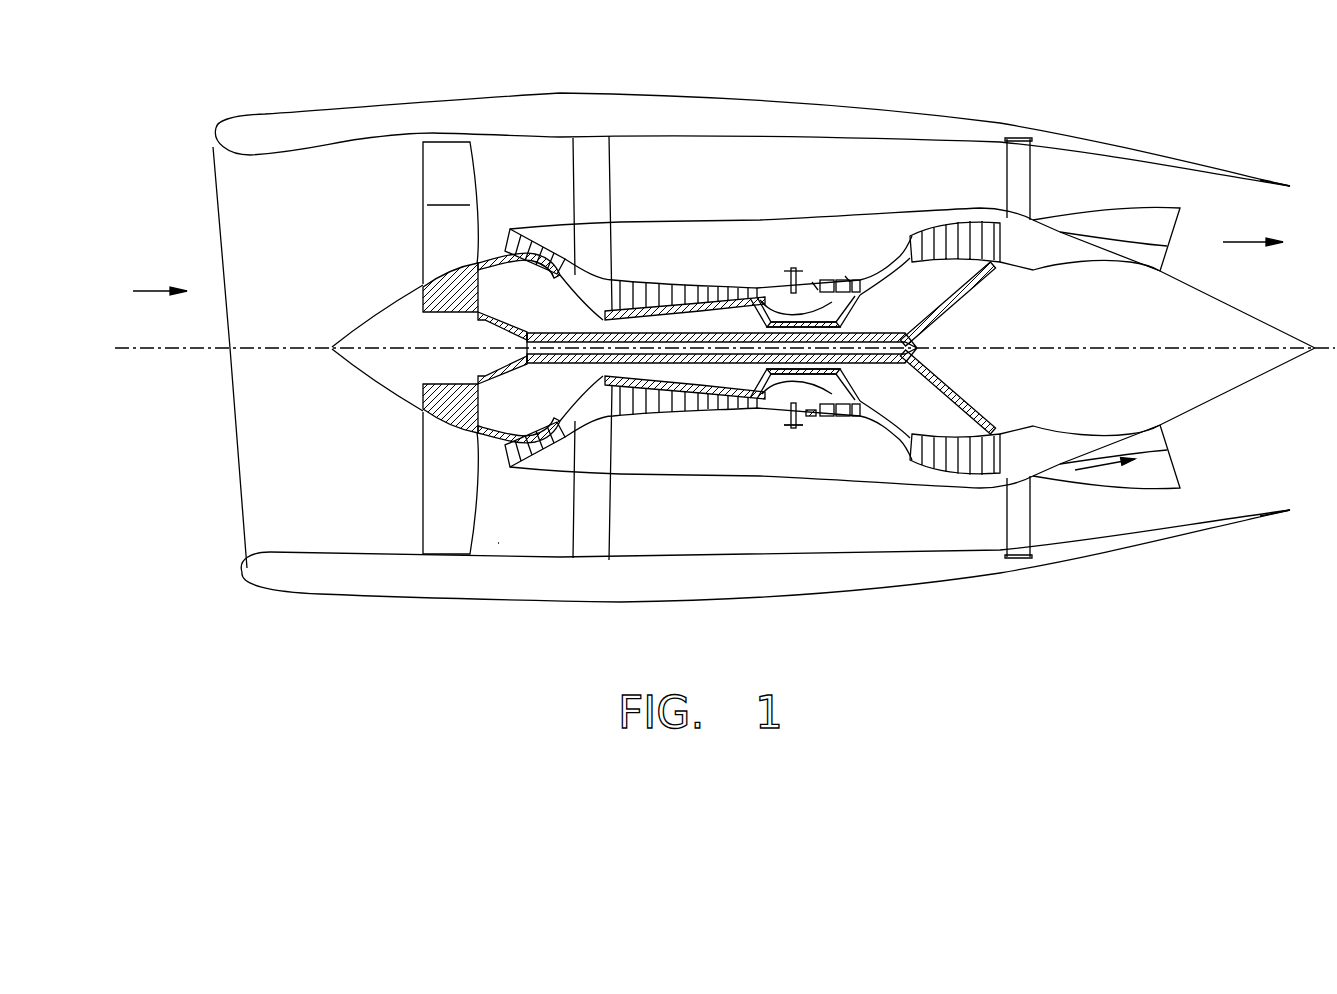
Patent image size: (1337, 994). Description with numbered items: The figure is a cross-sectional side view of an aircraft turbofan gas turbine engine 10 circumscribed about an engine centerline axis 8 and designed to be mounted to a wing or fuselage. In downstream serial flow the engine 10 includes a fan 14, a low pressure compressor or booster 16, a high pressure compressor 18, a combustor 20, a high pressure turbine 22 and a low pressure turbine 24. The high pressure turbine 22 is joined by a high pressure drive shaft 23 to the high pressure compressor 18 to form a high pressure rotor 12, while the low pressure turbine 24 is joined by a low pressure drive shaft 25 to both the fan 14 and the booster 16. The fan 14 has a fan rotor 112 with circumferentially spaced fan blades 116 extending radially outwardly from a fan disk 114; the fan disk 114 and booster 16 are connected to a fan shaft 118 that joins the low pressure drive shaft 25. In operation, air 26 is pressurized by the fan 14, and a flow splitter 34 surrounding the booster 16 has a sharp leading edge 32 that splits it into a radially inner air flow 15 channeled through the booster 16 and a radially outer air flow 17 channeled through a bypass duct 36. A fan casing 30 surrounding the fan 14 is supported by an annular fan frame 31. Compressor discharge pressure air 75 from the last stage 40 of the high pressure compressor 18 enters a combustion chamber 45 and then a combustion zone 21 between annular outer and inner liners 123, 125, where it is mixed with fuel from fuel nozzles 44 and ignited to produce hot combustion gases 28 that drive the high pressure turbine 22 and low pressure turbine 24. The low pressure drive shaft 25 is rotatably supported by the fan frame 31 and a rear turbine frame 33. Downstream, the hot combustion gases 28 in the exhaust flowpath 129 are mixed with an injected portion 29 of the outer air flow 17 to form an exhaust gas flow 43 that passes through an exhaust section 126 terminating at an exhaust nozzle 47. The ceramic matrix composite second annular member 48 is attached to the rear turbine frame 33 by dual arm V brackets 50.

The engine centerline axis 8 is at (316, 346).
The aircraft turbofan gas turbine engine 10 is at (1048, 78).
The high pressure rotor 12 is at (855, 314).
The fan 14 is at (447, 140).
The radially inner air flow 15 is at (450, 235).
The low pressure compressor or booster 16 is at (535, 262).
The radially outer air flow 17 is at (843, 170).
The high pressure compressor 18 is at (654, 280).
The combustor 20 is at (818, 287).
The combustion zone 21 is at (829, 280).
The high pressure turbine 22 is at (848, 280).
The high pressure drive shaft 23 is at (781, 320).
The low pressure turbine 24 is at (941, 225).
The low pressure drive shaft 25 is at (860, 362).
The air 26 is at (148, 290).
The hot combustion gases 28 is at (810, 424).
The injected portion of bypass air 29 is at (1093, 480).
The fan casing 30 is at (800, 600).
The fan frame 31 is at (611, 163).
The sharp leading edge 32 is at (510, 467).
The rear turbine frame 33 is at (1016, 216).
The flow splitter 34 is at (512, 466).
The bypass duct 36 is at (745, 188).
The last stage of the high pressure compressor 40 is at (775, 296).
The exhaust gas flow 43 is at (1238, 241).
The fuel nozzles 44 is at (787, 408).
The combustion chamber 45 is at (800, 282).
The exhaust nozzle 47 is at (1245, 516).
The second annular member 48 is at (1232, 320).
The dual arm V brackets 50 is at (1043, 212).
The compressor discharge pressure air 75 is at (790, 292).
The fan rotor 112 is at (422, 286).
The fan disk 114 is at (478, 293).
The fan blades 116 is at (449, 192).
The fan shaft 118 is at (510, 383).
The annular outer liner 123 is at (800, 426).
The annular inner liner 125 is at (793, 420).
The exhaust section 126 is at (1212, 188).
The exhaust flowpath 129 is at (1072, 261).